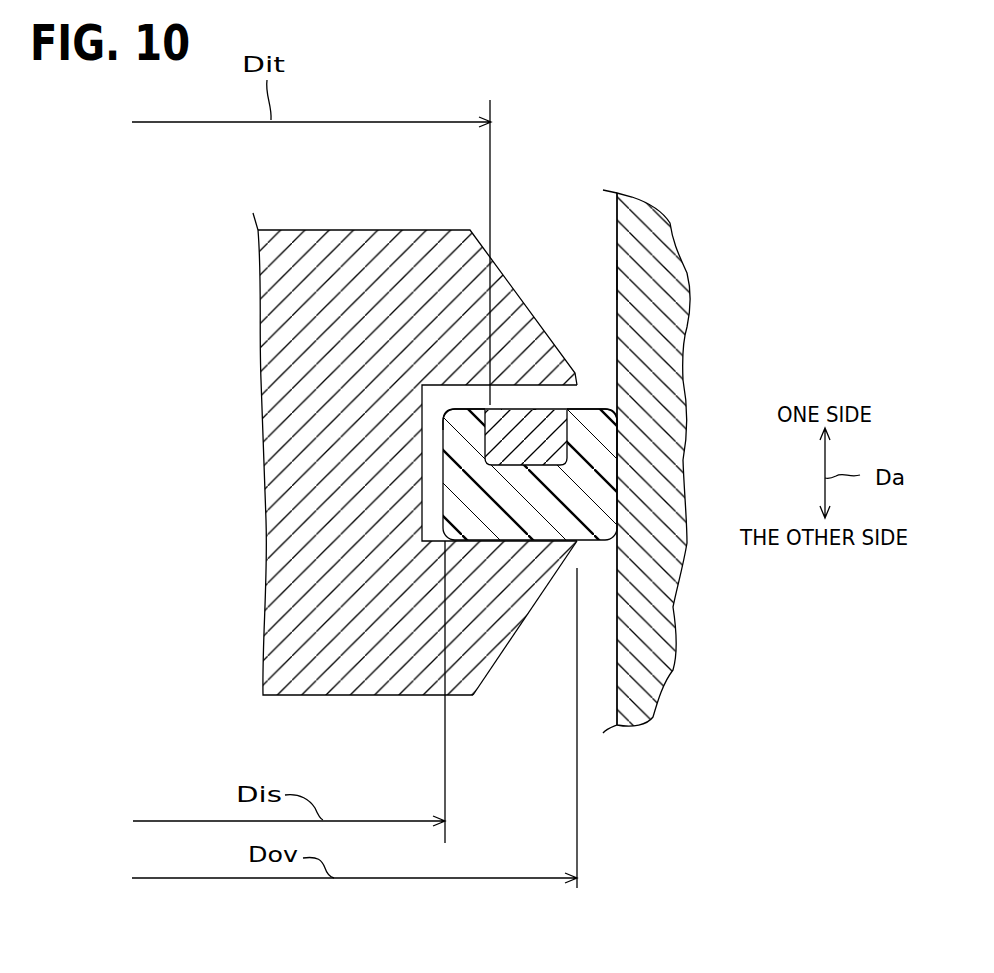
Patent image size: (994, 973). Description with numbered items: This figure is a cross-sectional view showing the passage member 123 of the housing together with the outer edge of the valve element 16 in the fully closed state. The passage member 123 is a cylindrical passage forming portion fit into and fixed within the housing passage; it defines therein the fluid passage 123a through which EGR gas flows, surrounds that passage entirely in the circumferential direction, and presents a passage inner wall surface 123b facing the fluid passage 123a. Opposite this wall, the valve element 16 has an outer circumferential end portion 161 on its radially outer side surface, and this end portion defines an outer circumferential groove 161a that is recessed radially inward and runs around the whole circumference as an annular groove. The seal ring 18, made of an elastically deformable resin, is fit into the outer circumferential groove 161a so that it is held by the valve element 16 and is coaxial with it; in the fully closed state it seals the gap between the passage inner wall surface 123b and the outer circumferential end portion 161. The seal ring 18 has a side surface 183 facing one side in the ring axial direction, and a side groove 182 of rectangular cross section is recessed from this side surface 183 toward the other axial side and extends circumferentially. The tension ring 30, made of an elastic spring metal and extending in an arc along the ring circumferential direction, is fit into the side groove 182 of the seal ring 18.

The valve element 16 is at (286, 228).
The outer circumferential end portion 161 is at (533, 587).
The outer circumferential groove 161a is at (435, 406).
The seal ring 18 is at (590, 519).
The side groove 182 is at (493, 453).
The side surface 183 is at (583, 408).
The tension ring 30 is at (550, 440).
The passage member 123 is at (652, 688).
The fluid passage 123a is at (570, 220).
The passage inner wall surface 123b is at (617, 277).